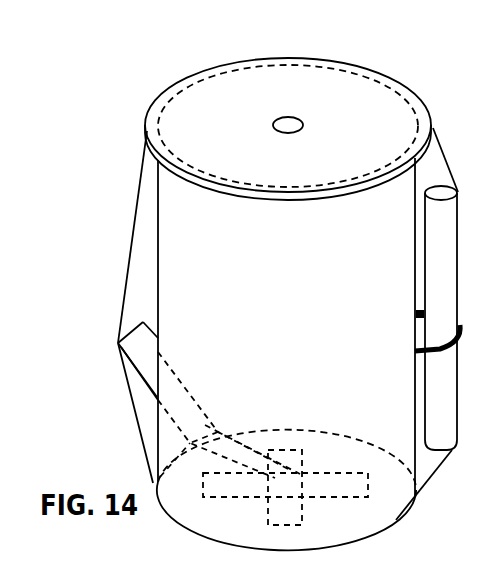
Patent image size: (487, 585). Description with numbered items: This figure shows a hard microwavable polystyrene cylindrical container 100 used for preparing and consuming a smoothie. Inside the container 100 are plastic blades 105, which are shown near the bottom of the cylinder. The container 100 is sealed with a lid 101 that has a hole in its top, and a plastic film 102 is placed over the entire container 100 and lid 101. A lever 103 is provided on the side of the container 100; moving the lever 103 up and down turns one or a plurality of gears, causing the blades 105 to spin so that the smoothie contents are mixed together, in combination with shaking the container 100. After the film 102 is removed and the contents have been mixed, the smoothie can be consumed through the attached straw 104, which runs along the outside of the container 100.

The container 100 is at (157, 283).
The lid 101 is at (200, 118).
The plastic film 102 is at (135, 208).
The lever 103 is at (142, 343).
The straw 104 is at (440, 263).
The plastic blades 105 is at (310, 457).